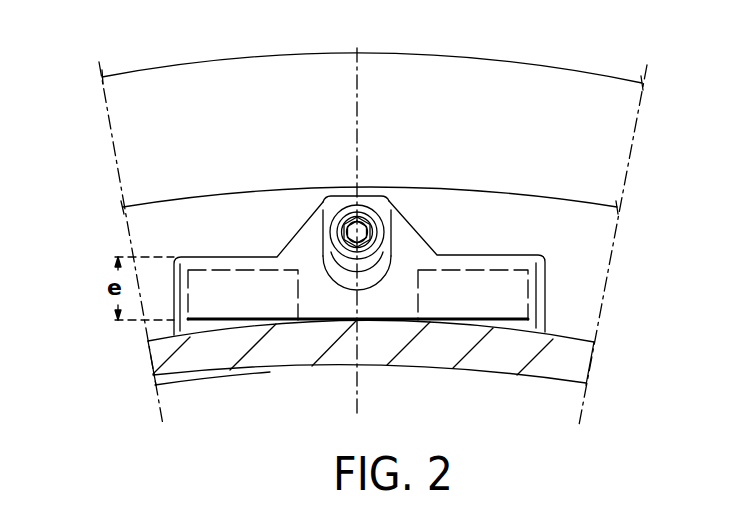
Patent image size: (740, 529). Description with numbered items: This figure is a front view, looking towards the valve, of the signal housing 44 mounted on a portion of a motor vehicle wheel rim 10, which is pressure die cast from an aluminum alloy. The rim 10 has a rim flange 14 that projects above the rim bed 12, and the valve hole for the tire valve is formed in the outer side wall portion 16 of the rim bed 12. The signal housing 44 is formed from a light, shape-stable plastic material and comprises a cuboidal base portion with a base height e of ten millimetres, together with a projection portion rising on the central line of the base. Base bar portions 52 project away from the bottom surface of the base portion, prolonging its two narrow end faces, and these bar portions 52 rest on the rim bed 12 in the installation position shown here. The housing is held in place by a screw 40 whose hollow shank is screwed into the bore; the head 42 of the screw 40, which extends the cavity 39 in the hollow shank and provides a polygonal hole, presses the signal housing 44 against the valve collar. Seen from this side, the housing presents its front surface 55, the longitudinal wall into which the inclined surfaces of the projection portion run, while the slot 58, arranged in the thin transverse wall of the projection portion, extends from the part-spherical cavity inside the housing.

The rim 10 is at (150, 363).
The rim bed 12 is at (245, 328).
The rim flange 14 is at (617, 143).
The outer side wall portion 16 is at (587, 247).
The cavity 39 is at (337, 261).
The screw 40 is at (326, 210).
The head 42 is at (358, 240).
The signal housing 44 is at (450, 234).
The base bar portions 52 is at (543, 328).
The front surface 55 is at (476, 309).
The slot 58 is at (367, 265).